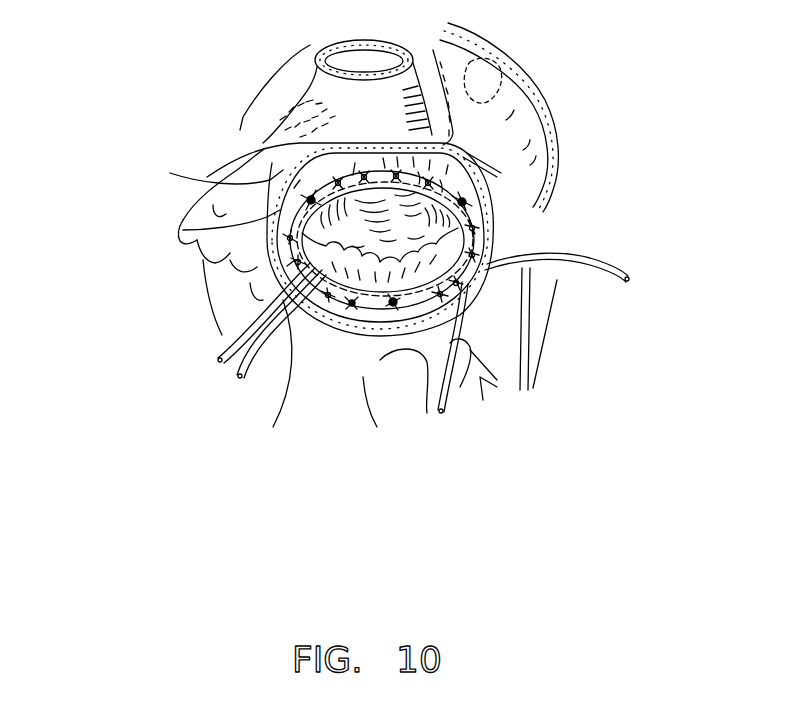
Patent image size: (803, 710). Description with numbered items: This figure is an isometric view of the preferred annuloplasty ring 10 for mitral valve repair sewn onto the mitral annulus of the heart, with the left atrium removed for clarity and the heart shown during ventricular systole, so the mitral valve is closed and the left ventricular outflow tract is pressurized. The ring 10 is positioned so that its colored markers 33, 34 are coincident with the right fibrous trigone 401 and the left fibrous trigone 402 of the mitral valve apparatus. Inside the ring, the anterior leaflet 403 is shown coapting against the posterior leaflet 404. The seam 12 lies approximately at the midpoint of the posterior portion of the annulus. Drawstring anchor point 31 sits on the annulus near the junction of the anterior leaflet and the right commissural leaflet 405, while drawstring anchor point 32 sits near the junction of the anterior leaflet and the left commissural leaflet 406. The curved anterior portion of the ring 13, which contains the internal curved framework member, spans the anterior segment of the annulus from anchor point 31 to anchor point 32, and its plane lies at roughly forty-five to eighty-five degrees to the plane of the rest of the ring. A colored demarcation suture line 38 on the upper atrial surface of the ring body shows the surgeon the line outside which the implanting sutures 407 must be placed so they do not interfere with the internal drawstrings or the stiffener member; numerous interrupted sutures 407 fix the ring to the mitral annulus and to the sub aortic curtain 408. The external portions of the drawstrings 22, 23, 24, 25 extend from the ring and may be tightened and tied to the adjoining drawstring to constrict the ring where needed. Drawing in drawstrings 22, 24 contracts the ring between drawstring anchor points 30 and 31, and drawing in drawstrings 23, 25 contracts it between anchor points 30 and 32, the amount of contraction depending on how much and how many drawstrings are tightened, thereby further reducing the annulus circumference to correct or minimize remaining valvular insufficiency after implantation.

The annuloplasty ring 10 is at (272, 247).
The seam 12 is at (393, 302).
The curved anterior portion of the ring 13 is at (477, 212).
The drawstring 22 is at (584, 268).
The drawstring 23 is at (218, 360).
The drawstring 24 is at (440, 413).
The drawstring 25 is at (237, 373).
The drawstring anchor point 30 is at (392, 310).
The drawstring anchor point 31 is at (470, 242).
The drawstring anchor point 32 is at (290, 196).
The colored marker 33 is at (465, 208).
The colored marker 34 is at (262, 183).
The colored demarcation suture line 38 is at (475, 290).
The right fibrous trigone 401 is at (470, 210).
The left fibrous trigone 402 is at (311, 200).
The anterior leaflet 403 is at (355, 180).
The posterior leaflet 404 is at (345, 300).
The right commissural leaflet 405 is at (470, 268).
The left commissural leaflet 406 is at (183, 230).
The implanting sutures 407 is at (247, 370).
The sub aortic curtain 408 is at (428, 205).